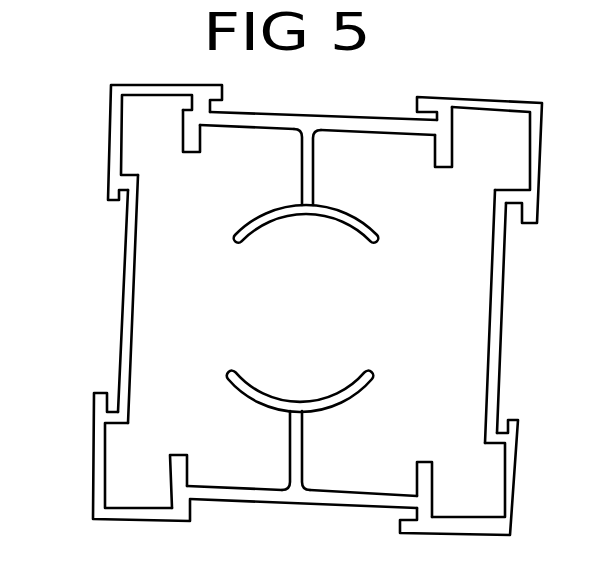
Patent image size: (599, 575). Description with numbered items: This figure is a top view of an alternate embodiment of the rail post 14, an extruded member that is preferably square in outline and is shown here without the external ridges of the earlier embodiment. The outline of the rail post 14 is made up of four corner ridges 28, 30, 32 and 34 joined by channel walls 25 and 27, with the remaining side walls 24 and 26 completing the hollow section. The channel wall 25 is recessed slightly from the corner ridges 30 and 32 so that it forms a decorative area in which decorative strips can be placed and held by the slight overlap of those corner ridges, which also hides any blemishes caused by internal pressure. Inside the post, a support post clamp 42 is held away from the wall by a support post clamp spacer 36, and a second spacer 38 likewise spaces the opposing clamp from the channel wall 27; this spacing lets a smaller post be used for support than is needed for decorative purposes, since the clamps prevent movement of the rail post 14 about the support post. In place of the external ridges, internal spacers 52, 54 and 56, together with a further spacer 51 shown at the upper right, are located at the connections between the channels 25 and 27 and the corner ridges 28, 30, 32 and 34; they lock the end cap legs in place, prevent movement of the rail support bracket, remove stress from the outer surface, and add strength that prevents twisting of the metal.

The rail post 14 is at (304, 325).
The right side wall 24 is at (498, 302).
The channel wall 25 is at (324, 506).
The left side wall 26 is at (120, 303).
The wall 27 is at (362, 118).
The corner ridge 28 is at (540, 160).
The corner ridge 30 is at (487, 534).
The corner ridge 32 is at (160, 522).
The corner ridge 34 is at (110, 150).
The support post clamp spacer 36 is at (303, 444).
The support post clamp spacer 38 is at (313, 171).
The support post clamp 42 is at (259, 403).
The upper right hook 51 is at (440, 167).
The spacer 52 is at (449, 448).
The spacer 54 is at (176, 456).
The spacer 56 is at (192, 154).